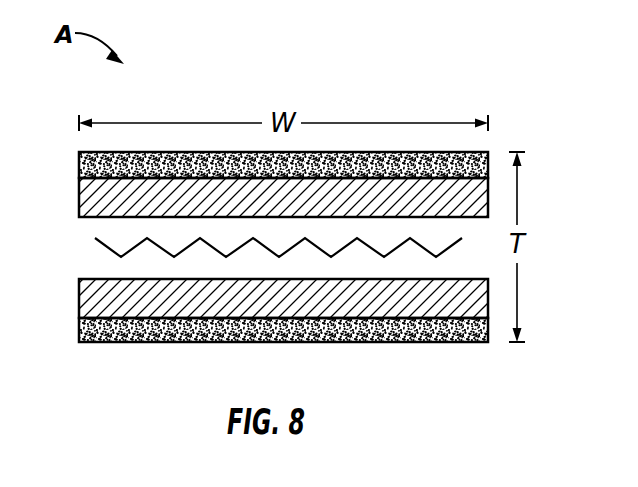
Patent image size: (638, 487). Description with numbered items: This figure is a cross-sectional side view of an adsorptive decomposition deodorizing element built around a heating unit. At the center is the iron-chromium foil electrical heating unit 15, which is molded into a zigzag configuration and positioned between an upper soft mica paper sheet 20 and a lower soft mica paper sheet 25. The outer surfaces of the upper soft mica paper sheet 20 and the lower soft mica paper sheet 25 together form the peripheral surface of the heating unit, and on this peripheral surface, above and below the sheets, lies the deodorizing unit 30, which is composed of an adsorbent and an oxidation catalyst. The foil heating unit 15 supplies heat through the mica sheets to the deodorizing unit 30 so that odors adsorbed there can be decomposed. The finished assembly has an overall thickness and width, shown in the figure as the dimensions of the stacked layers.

The corrugated core layer 15 is at (96, 239).
The lower substrate layer 20 is at (79, 300).
The upper substrate layer 25 is at (79, 197).
The outer coating layer 30 is at (79, 163).